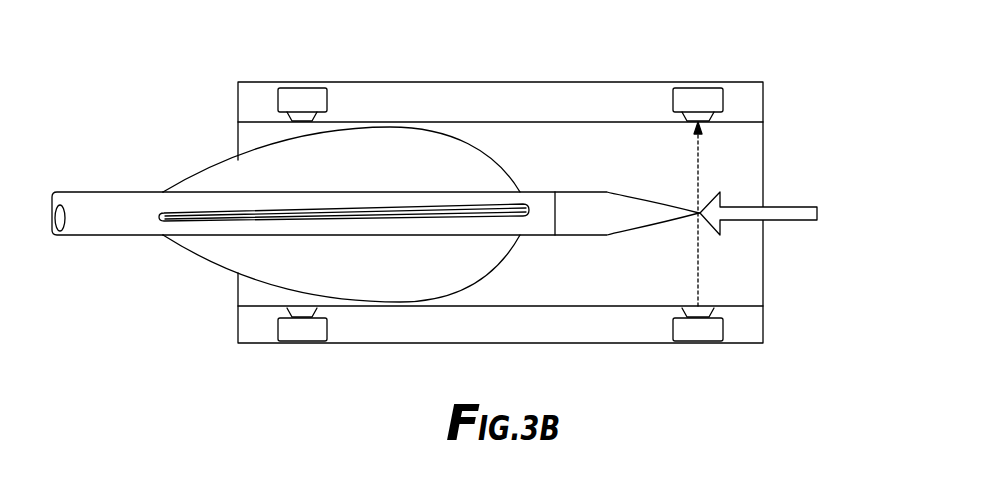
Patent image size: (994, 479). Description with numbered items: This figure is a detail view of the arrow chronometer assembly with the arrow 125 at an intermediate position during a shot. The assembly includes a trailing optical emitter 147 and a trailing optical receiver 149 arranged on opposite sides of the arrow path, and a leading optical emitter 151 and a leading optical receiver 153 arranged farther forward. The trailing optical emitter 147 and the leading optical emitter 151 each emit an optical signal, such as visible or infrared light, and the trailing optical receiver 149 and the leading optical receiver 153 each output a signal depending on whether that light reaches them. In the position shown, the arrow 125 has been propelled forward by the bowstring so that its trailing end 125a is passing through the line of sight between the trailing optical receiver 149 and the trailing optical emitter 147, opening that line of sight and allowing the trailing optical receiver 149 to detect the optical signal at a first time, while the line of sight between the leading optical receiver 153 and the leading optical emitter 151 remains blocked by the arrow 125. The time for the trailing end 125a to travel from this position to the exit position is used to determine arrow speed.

The arrow 125 is at (124, 192).
The trailing end 125a is at (701, 215).
The trailing optical emitter 147 is at (722, 332).
The trailing optical receiver 149 is at (705, 87).
The leading optical emitter 151 is at (293, 341).
The leading optical receiver 153 is at (313, 88).